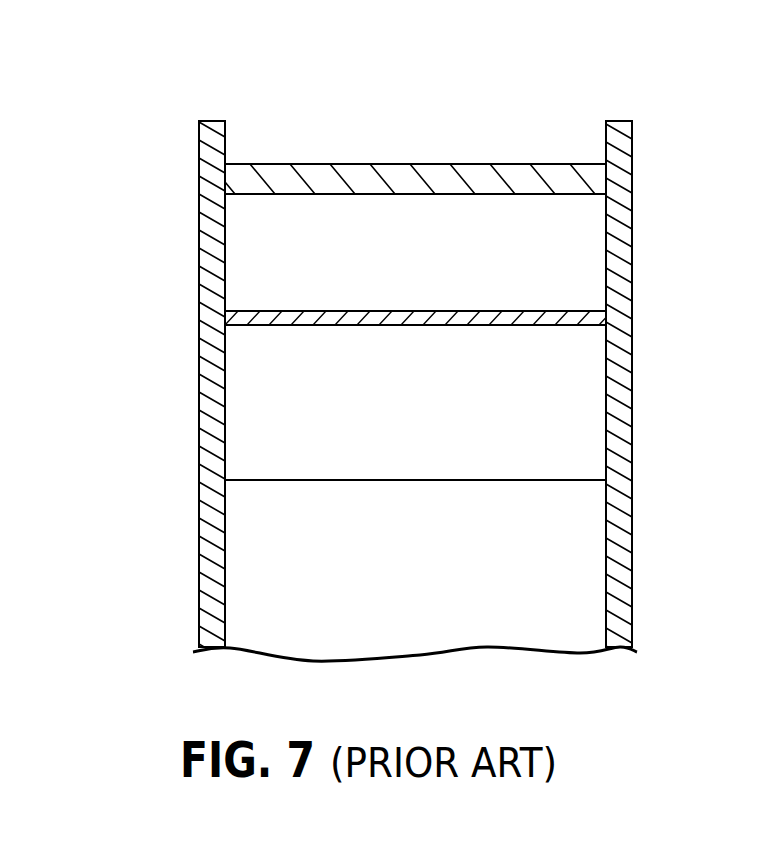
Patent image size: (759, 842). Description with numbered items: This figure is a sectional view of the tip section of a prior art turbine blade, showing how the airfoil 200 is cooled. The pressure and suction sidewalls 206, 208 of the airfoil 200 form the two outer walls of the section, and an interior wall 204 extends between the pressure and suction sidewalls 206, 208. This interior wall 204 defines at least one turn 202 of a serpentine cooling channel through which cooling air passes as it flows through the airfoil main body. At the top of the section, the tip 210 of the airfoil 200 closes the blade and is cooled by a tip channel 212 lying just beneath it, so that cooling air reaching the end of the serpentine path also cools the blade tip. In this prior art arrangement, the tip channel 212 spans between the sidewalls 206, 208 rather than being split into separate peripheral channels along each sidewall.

The airfoil 200 is at (151, 183).
The turn 202 is at (427, 418).
The interior wall 204 is at (505, 607).
The pressure sidewall 206 is at (633, 509).
The suction sidewall 208 is at (200, 473).
The tip 210 is at (440, 155).
The tip channel 212 is at (427, 270).